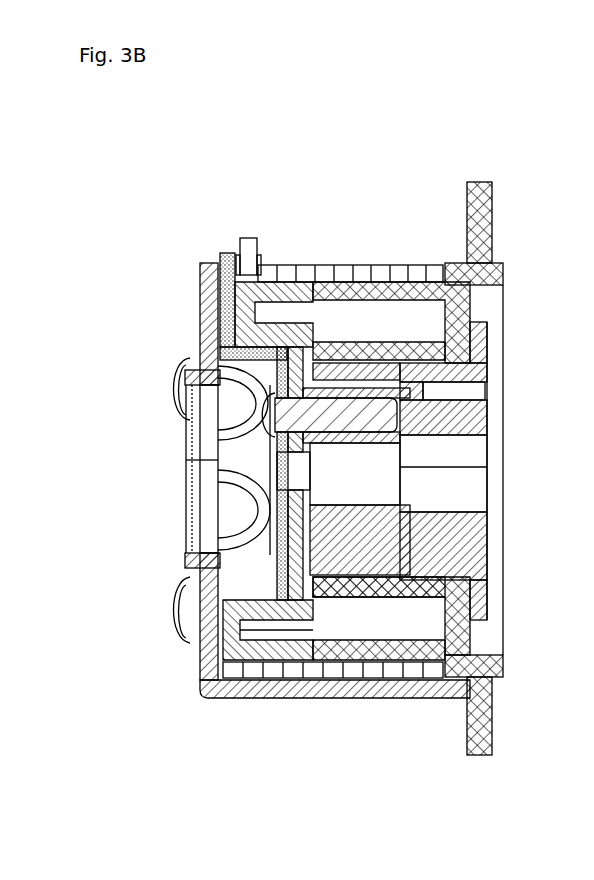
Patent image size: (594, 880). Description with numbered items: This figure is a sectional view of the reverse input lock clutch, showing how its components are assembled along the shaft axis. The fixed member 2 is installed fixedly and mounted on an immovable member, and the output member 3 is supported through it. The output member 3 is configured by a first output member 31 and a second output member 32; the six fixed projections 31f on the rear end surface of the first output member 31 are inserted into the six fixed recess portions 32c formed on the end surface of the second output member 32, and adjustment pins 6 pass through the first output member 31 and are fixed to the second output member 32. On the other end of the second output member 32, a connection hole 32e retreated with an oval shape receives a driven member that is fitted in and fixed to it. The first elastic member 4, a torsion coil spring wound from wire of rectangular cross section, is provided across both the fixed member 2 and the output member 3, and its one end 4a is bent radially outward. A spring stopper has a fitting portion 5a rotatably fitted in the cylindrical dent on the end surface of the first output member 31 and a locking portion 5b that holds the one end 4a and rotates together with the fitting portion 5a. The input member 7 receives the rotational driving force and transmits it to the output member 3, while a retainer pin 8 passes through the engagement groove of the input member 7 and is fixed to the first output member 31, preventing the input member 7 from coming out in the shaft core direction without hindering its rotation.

The fixed member 2 is at (467, 208).
The output member 3 is at (357, 213).
The first output member 31 is at (280, 280).
The second output member 32 is at (350, 345).
The fixed recess portion 32c is at (395, 570).
The connection hole 32e is at (458, 510).
The fixed projection 31f is at (343, 552).
The first elastic member 4 is at (400, 263).
The one end 4a is at (250, 238).
The fitting portion 5a is at (283, 545).
The locking portion 5b is at (228, 253).
The adjustment pin 6 is at (272, 502).
The input member 7 is at (267, 698).
The retainer pin 8 is at (173, 383).